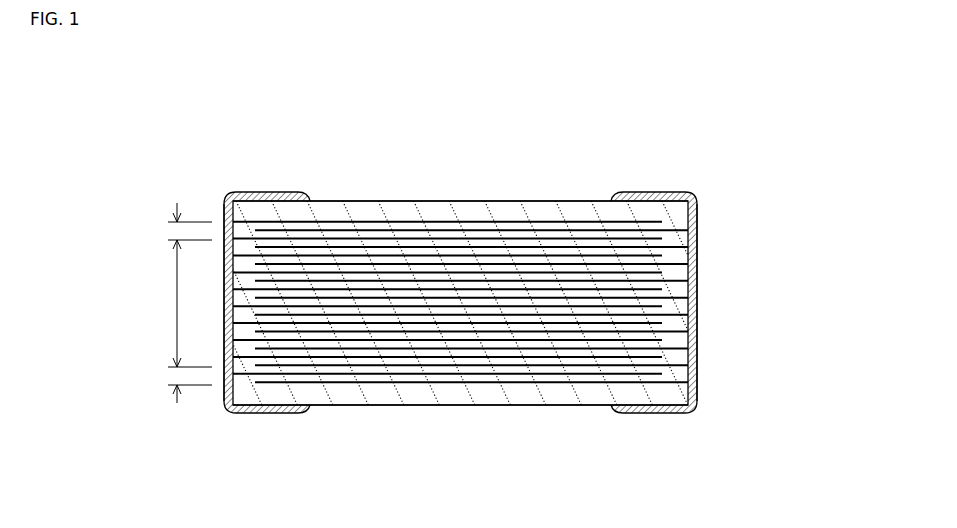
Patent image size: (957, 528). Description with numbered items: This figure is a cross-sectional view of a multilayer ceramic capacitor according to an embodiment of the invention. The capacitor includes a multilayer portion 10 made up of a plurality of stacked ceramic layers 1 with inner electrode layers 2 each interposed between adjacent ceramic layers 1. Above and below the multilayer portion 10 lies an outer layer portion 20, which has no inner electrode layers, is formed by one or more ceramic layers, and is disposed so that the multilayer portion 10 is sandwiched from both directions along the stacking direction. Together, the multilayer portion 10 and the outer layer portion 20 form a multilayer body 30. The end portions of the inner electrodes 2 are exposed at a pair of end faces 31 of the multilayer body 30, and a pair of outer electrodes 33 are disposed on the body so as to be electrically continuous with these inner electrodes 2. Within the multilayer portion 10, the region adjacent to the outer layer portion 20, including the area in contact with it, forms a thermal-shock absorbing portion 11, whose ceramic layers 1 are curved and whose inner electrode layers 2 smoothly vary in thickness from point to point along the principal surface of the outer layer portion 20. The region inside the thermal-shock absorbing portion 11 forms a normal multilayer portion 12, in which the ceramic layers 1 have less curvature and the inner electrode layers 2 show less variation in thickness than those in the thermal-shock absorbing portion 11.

The ceramic layer 1 is at (402, 343).
The inner electrode layer 2 is at (390, 243).
The multilayer portion 10 is at (97, 227).
The thermal-shock absorbing portion 11 is at (177, 229).
The normal multilayer portion 12 is at (177, 305).
The outer layer portion 20 is at (468, 200).
The multilayer body 30 is at (582, 200).
The end face 31 is at (223, 228).
The outer electrode 33 is at (226, 401).